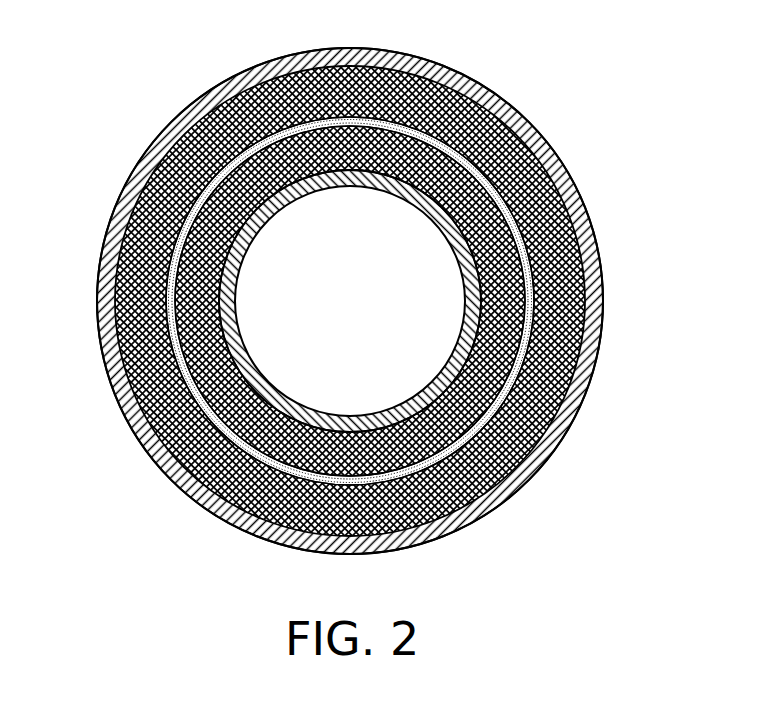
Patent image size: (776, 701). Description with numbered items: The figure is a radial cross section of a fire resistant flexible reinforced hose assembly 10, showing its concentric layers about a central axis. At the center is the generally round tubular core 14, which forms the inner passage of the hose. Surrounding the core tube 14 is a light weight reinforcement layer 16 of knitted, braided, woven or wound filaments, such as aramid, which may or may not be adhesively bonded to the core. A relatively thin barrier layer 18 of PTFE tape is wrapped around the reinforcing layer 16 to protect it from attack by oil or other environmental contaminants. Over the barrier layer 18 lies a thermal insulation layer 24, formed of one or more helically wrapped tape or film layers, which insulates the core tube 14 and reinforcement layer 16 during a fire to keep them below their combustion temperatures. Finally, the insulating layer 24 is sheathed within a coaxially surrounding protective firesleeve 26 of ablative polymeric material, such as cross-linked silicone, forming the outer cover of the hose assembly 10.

The hose assembly 10 is at (200, 48).
The tubular core 14 is at (410, 207).
The reinforcement layer 16 is at (507, 198).
The barrier layer 18 is at (538, 279).
The thermal insulation layer 24 is at (555, 330).
The firesleeve 26 is at (563, 425).